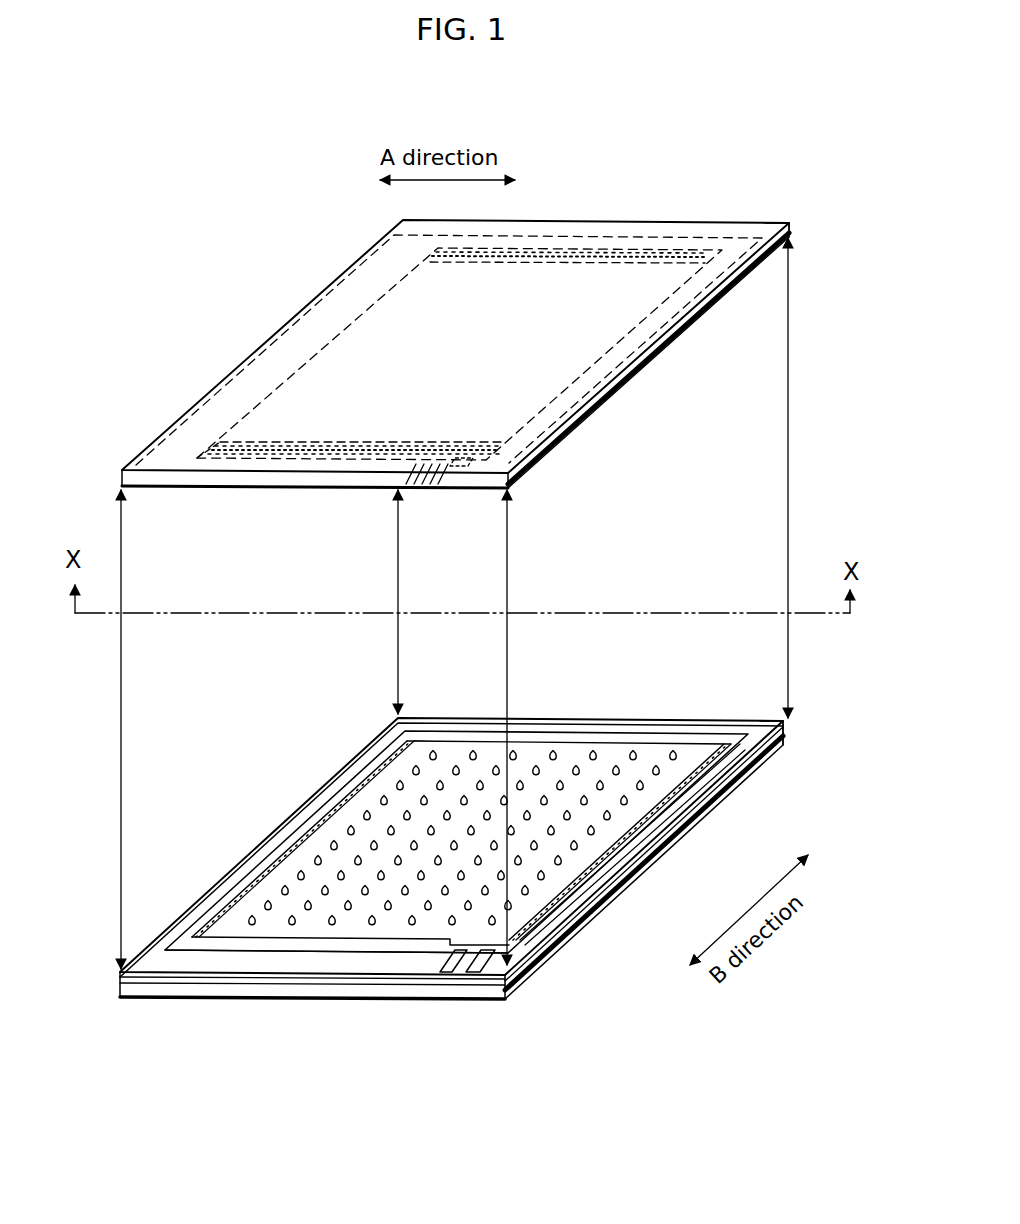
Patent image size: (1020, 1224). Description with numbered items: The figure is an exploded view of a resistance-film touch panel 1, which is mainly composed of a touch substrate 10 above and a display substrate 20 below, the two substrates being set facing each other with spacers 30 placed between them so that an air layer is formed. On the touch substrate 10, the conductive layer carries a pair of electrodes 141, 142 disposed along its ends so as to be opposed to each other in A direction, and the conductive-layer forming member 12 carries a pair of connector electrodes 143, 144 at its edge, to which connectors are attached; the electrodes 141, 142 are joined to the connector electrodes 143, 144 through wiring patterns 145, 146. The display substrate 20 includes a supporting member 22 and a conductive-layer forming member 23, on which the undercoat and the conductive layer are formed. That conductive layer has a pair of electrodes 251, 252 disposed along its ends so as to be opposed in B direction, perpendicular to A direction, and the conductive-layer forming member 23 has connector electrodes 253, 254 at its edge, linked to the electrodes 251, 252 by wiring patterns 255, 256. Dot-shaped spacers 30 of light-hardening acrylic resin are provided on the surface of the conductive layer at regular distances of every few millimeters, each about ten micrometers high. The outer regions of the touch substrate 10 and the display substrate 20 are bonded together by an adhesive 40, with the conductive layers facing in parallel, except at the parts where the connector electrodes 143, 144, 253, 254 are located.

The touch panel 1 is at (836, 142).
The touch substrate 10 is at (192, 394).
The conductive-layer forming member 12 is at (766, 223).
The display substrate 20 is at (215, 866).
The supporting member 22 is at (773, 757).
The conductive-layer forming member 23 is at (780, 721).
The spacers 30 is at (497, 795).
The adhesive 40 is at (611, 717).
The electrode 141 is at (512, 465).
The electrode 142 is at (610, 252).
The connector electrode 143 is at (420, 488).
The connector electrode 144 is at (433, 483).
The wiring pattern 145 is at (293, 367).
The wiring pattern 146 is at (458, 461).
The electrode 251 is at (353, 787).
The electrode 252 is at (717, 790).
The connector electrode 253 is at (442, 975).
The connector electrode 254 is at (467, 978).
The wiring pattern 255 is at (270, 948).
The wiring pattern 256 is at (587, 897).